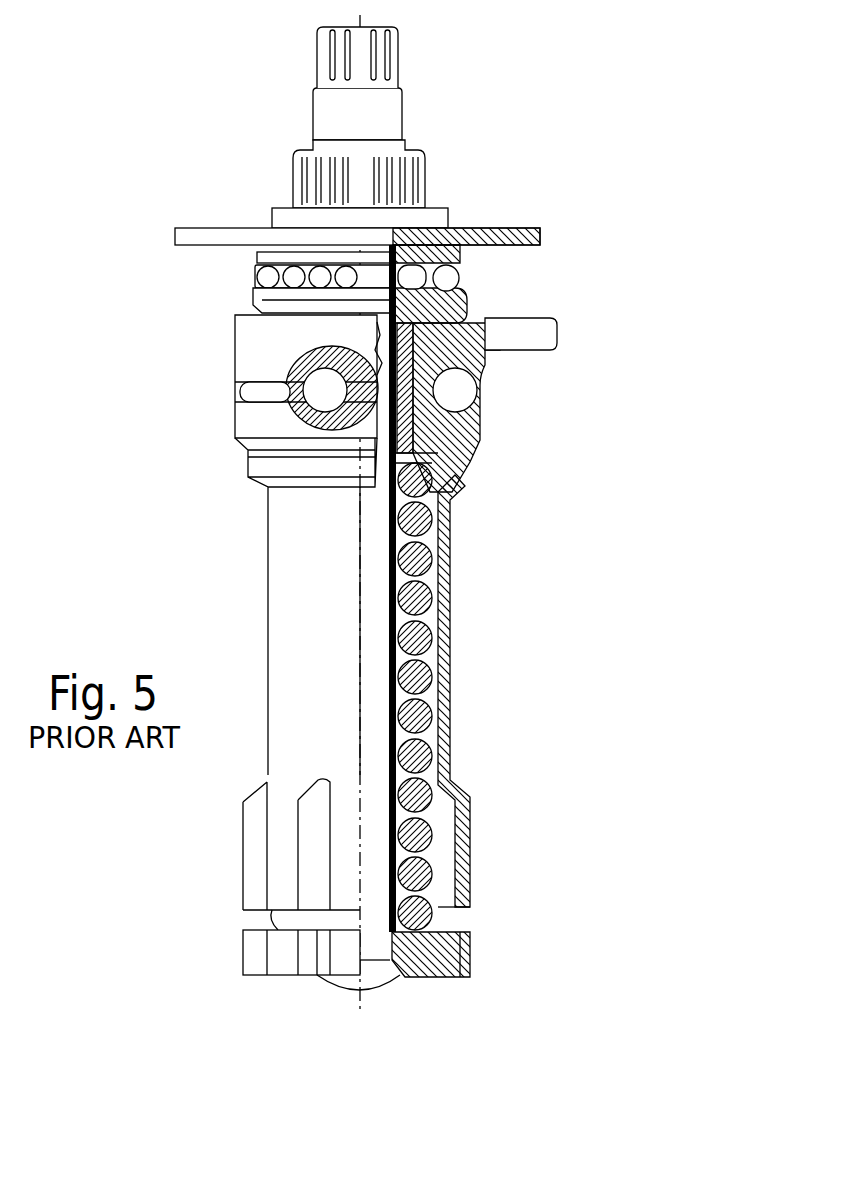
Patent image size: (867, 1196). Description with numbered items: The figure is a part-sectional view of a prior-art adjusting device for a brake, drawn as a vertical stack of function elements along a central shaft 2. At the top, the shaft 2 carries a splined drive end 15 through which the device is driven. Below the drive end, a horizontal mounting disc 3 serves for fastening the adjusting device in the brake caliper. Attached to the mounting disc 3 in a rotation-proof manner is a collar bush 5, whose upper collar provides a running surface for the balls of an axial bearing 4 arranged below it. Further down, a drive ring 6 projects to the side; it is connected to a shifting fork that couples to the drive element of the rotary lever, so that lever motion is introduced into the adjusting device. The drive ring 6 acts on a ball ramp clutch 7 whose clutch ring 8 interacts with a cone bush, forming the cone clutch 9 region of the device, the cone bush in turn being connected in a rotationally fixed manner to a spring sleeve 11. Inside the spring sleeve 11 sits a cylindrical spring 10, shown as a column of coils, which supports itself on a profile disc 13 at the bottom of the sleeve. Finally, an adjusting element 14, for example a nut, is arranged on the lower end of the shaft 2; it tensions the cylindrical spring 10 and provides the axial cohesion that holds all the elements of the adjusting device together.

The shaft 2 is at (320, 112).
The mounting disc 3 is at (510, 230).
The axial bearing 4 is at (472, 280).
The collar bush 5 is at (255, 300).
The drive ring 6 is at (558, 320).
The ball ramp clutch 7 is at (500, 392).
The clutch ring 8 is at (480, 433).
The cone clutch 9 is at (217, 468).
The cylindrical spring 10 is at (438, 920).
The spring sleeve 11 is at (450, 732).
The profile disc 13 is at (430, 968).
The adjusting element 14 is at (323, 985).
The drive end 15 is at (370, 55).